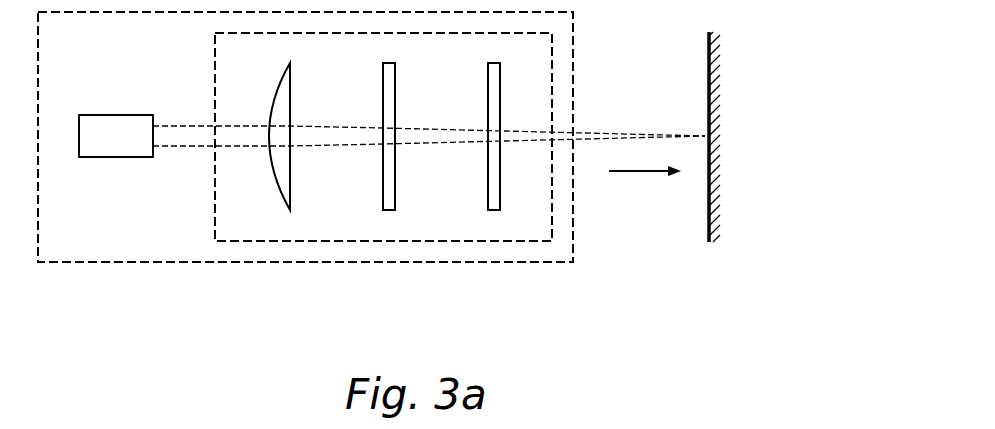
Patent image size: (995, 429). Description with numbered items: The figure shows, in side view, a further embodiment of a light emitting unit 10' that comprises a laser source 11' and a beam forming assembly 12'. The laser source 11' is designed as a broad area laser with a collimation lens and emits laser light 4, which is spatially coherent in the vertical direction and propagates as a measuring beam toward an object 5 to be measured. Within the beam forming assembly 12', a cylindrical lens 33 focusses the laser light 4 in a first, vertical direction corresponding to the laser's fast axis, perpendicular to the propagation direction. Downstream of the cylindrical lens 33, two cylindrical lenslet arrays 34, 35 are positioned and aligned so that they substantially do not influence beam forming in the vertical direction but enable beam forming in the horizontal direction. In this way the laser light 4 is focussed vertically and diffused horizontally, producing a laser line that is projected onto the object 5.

The light emitting unit 10' is at (305, 137).
The beam forming assembly 12' is at (383, 137).
The laser source 11' is at (102, 166).
The laser light 4 is at (419, 171).
The cylindrical lens 33 is at (246, 183).
The cylindrical lenslet array 34 is at (353, 182).
The cylindrical lenslet array 35 is at (459, 182).
The object 5 is at (737, 137).